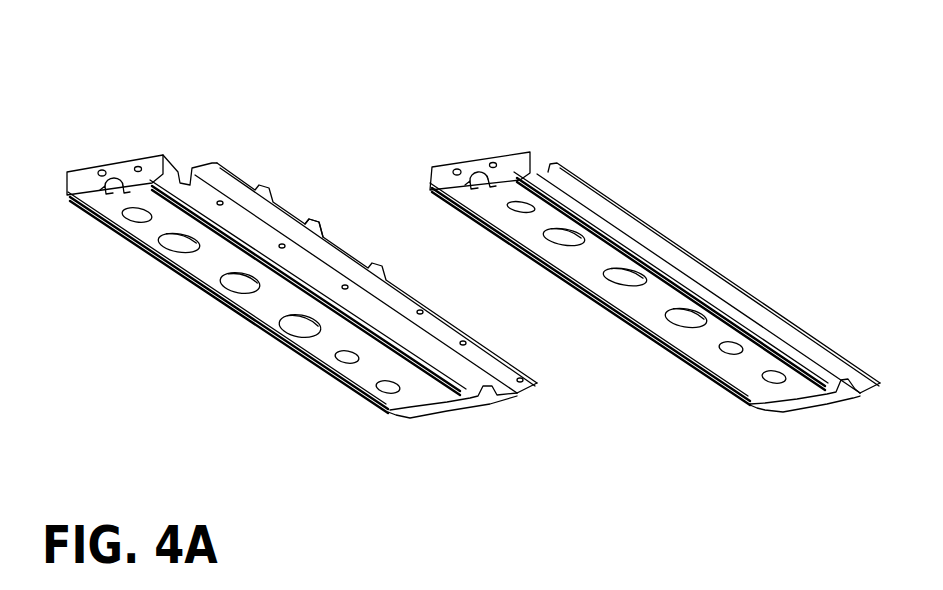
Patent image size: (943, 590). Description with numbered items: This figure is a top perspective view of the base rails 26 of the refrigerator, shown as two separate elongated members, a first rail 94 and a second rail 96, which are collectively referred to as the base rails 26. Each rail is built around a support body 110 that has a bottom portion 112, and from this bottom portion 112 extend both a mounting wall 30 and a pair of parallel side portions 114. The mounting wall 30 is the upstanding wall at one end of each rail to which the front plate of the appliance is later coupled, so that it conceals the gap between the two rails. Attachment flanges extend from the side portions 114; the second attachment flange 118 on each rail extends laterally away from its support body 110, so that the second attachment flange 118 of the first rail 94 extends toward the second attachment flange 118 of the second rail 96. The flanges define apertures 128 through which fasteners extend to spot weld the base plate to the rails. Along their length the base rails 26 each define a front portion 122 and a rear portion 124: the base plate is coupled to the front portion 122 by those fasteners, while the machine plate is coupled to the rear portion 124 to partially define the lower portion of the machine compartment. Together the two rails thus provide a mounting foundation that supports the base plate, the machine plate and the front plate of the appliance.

The base rails 26 is at (456, 252).
The mounting wall 30 is at (318, 140).
The first rail 94 is at (366, 305).
The second rail 96 is at (708, 305).
The support body 110 is at (397, 294).
The bottom portion 112 is at (478, 280).
The side portions 114 is at (488, 290).
The second attachment flange 118 is at (229, 145).
The front portion 122 is at (432, 253).
The rear portion 124 is at (474, 336).
The apertures 128 is at (335, 200).